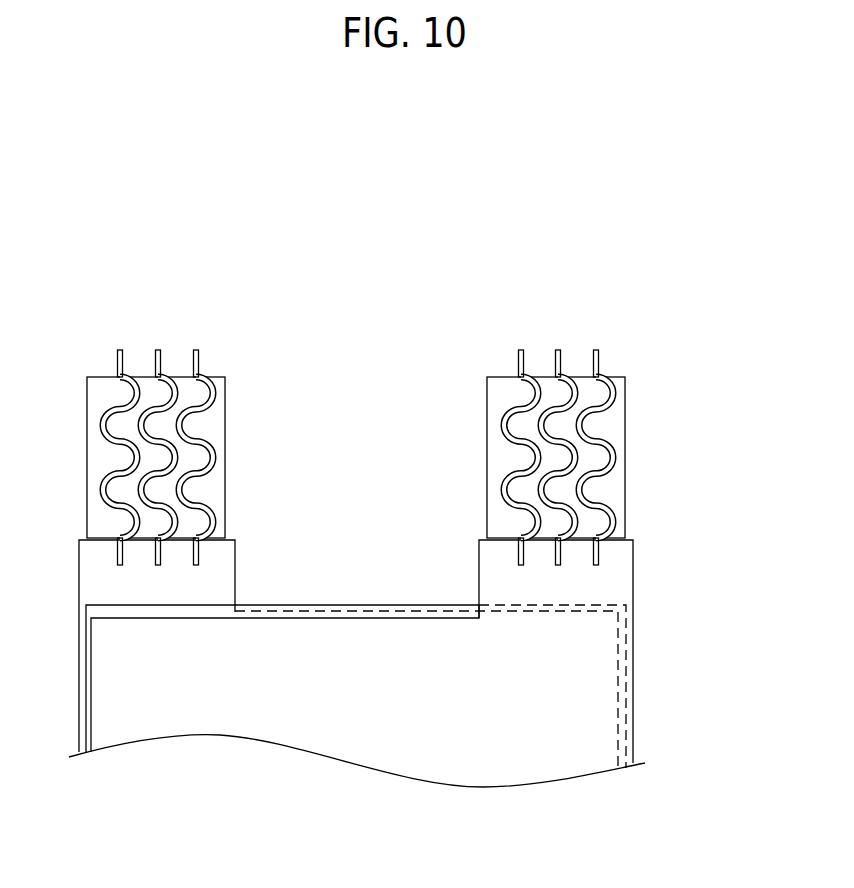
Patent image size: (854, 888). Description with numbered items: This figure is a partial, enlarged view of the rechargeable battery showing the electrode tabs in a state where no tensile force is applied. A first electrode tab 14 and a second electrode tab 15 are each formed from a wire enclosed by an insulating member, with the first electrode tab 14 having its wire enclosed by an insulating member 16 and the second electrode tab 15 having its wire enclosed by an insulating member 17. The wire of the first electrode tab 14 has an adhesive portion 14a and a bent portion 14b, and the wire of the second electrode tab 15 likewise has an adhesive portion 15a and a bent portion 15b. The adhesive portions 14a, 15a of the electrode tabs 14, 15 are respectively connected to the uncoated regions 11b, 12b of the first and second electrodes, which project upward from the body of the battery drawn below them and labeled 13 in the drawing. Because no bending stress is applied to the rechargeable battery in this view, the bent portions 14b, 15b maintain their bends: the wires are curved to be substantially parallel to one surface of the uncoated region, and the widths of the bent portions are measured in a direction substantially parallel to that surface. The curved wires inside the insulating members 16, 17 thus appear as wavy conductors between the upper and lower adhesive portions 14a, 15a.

The uncoated region of the first electrode 11b is at (222, 585).
The uncoated region of the second electrode 12b is at (610, 588).
The case body 13 is at (86, 643).
The first electrode tab 14 is at (221, 461).
The adhesive portion 14a is at (321, 567).
The bent portion 14b is at (187, 437).
The second electrode tab 15 is at (619, 461).
The adhesive portion 15a is at (598, 358).
The bent portion 15b is at (588, 437).
The insulating member 16 is at (225, 490).
The insulating member 17 is at (625, 490).